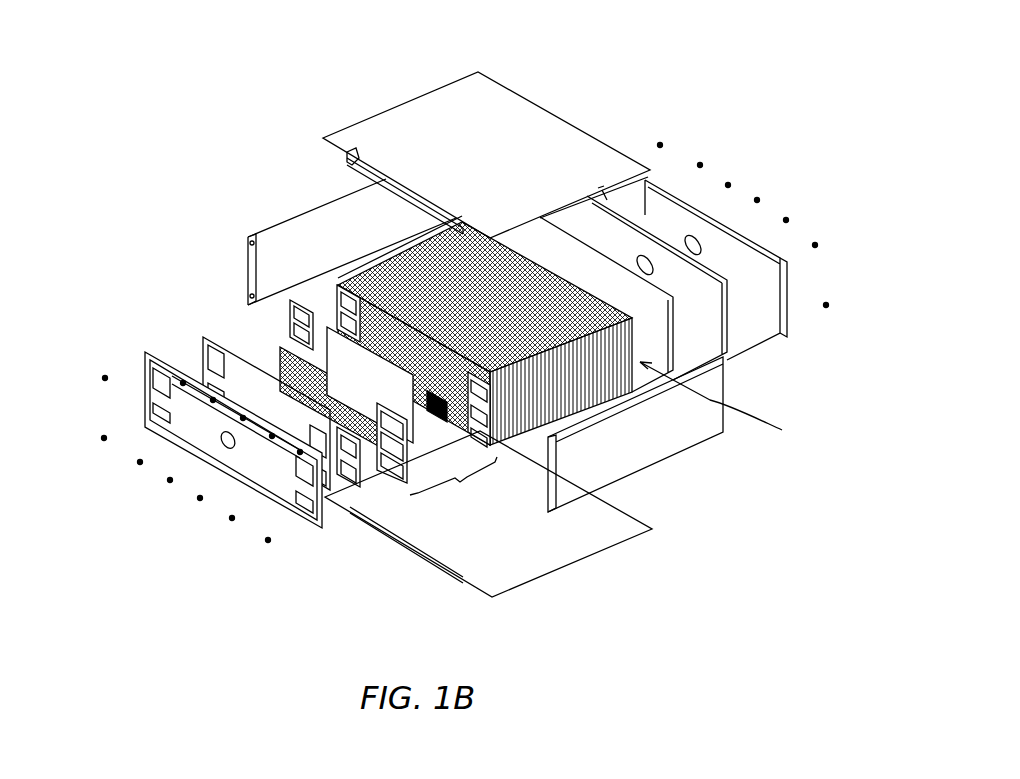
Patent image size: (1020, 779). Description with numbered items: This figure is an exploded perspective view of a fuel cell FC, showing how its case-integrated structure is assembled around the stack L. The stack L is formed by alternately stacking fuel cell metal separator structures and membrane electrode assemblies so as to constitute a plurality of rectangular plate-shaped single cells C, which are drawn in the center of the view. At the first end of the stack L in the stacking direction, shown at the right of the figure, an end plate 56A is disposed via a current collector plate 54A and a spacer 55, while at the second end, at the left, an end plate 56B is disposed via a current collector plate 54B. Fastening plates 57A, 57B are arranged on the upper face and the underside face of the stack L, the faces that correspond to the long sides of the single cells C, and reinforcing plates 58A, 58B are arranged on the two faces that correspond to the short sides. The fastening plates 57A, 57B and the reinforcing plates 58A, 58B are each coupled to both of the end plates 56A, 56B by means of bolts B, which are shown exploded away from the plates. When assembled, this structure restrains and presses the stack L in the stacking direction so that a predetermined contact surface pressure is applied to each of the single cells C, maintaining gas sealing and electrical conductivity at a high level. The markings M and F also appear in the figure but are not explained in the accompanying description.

The fuel cell FC is at (776, 78).
The fastening plate 57A is at (402, 122).
The fastening plate 57B is at (548, 567).
The reinforcing plate 58A is at (292, 208).
The reinforcing plate 58B is at (662, 450).
The current collector plate 54A is at (645, 300).
The current collector plate 54B is at (235, 370).
The spacer 55 is at (718, 323).
The end plate 56A is at (770, 262).
The end plate 56B is at (212, 452).
The cell stack body M is at (363, 360).
The frame F is at (322, 328).
The fuel cell single cell C is at (453, 485).
The stack L is at (720, 402).
The bolts B is at (664, 147).